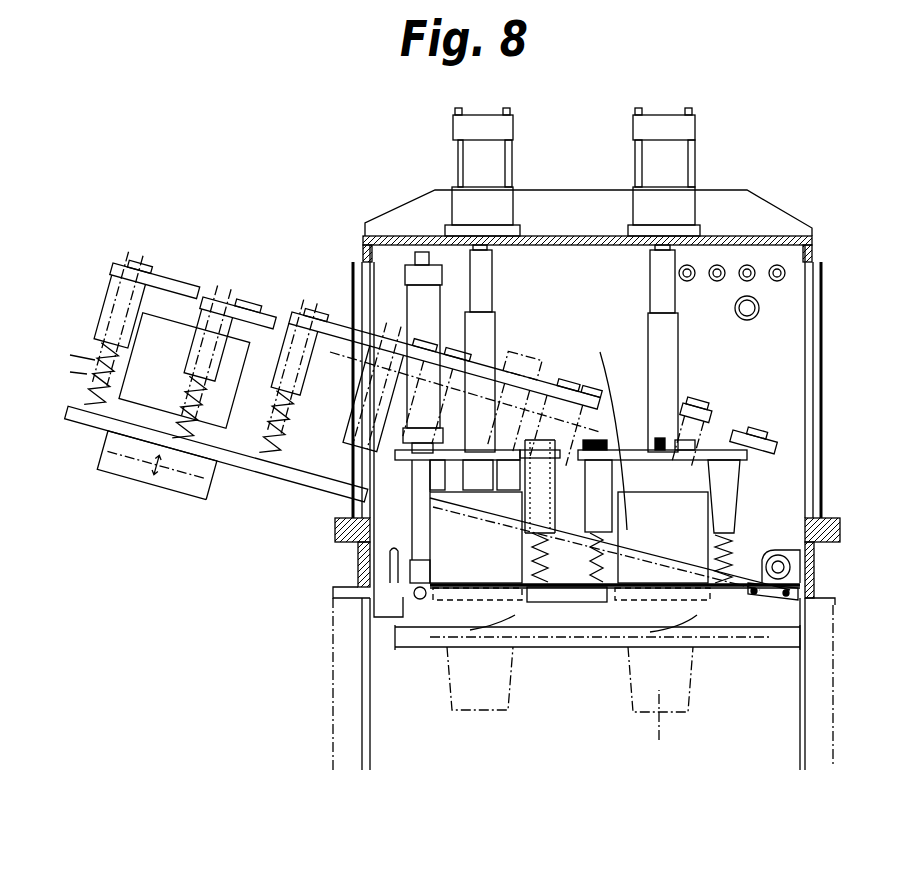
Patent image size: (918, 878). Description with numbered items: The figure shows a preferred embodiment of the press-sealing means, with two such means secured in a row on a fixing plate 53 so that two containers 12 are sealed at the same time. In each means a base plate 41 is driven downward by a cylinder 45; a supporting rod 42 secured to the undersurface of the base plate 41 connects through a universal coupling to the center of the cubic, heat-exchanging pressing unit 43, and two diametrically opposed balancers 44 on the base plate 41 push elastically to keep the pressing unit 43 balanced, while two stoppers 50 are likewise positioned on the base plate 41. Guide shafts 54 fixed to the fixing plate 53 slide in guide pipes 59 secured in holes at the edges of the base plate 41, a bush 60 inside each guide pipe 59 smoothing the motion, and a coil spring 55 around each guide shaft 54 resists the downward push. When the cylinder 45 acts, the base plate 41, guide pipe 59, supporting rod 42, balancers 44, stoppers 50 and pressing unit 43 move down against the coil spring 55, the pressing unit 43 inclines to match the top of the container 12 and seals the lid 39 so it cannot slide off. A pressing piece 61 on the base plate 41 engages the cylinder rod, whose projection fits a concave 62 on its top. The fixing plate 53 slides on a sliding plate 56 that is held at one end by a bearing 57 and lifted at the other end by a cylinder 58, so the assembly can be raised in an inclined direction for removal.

The container 12 is at (662, 734).
The lid 39 is at (688, 618).
The base plate 41 is at (700, 460).
The supporting rod 42 is at (603, 423).
The pressing unit 43 is at (650, 540).
The balancer 44 is at (352, 495).
The cylinder 45 is at (480, 158).
The stopper 50 is at (728, 512).
The fixing plate 53 is at (563, 600).
The guide shaft 54 is at (761, 602).
The coil spring 55 is at (735, 545).
The sliding plate 56 is at (633, 600).
The bearing 57 is at (792, 570).
The cylinder 58 is at (412, 318).
The guide pipe 59 is at (765, 505).
The bush 60 is at (524, 518).
The pressing piece 61 is at (688, 462).
The concave 62 is at (665, 447).